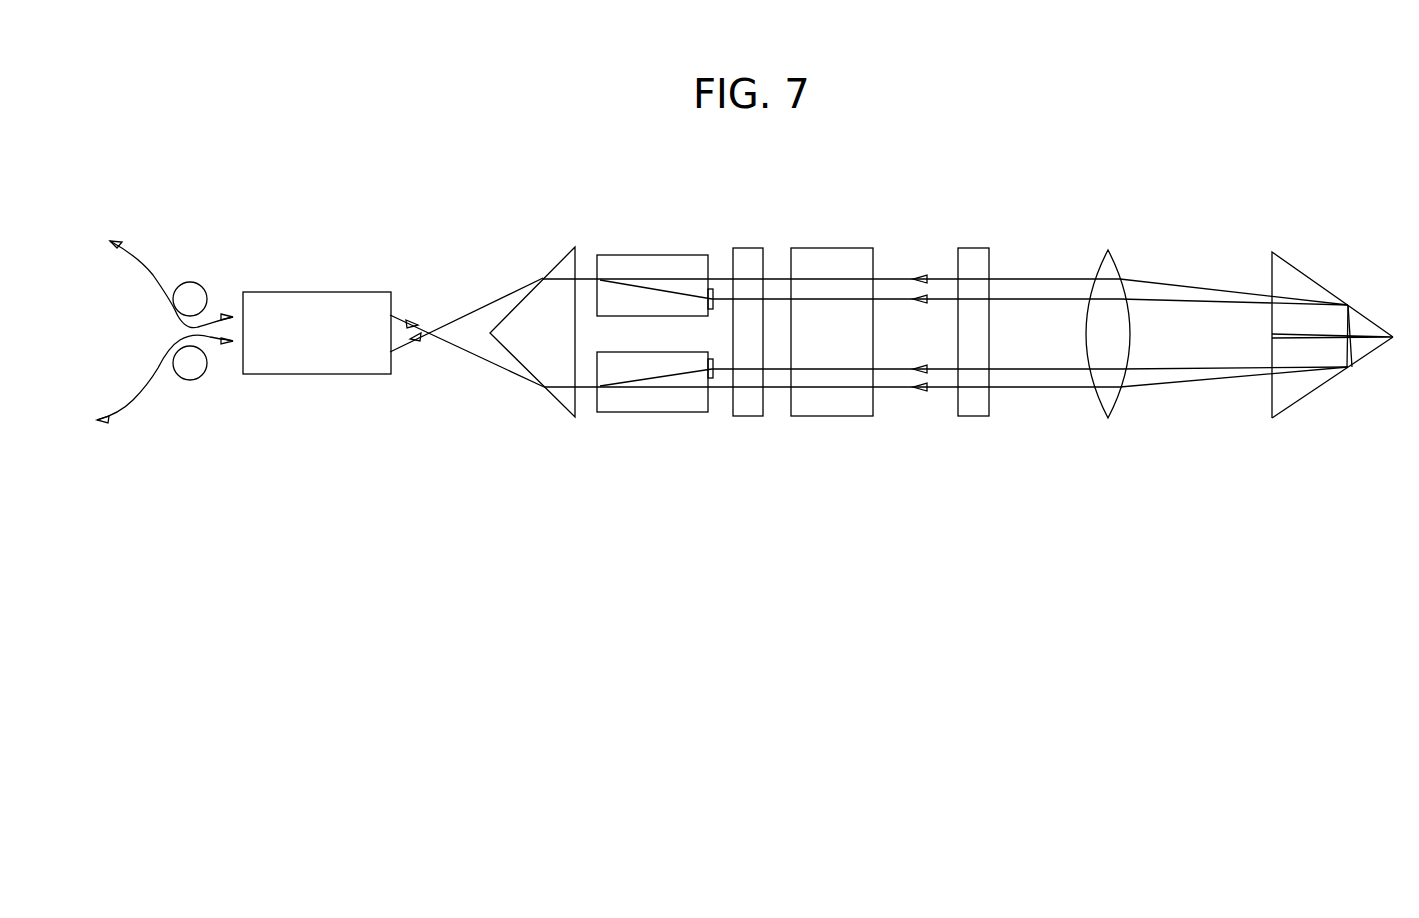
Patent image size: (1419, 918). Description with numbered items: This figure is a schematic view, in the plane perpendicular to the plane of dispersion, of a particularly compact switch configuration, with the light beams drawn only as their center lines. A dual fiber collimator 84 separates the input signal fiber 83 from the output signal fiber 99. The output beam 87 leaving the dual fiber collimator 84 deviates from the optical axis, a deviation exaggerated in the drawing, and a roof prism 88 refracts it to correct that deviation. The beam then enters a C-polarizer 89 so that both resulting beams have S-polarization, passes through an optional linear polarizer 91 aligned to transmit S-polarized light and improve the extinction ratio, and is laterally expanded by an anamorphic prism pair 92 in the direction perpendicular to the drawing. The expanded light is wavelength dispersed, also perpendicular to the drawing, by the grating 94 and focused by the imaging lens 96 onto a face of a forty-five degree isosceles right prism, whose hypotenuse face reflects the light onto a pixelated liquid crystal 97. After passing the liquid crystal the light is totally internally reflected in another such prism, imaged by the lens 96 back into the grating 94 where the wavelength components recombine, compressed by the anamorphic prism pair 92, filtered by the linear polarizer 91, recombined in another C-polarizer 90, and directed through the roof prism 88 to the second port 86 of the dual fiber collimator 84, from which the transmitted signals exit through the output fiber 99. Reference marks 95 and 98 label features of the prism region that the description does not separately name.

The input signal fiber 83 is at (153, 275).
The dual fiber collimator 84 is at (312, 292).
The second port 86 is at (460, 316).
The output beam 87 is at (462, 352).
The roof prism 88 is at (557, 265).
The C-polarizer 89 is at (653, 413).
The C-polarizer 90 is at (653, 254).
The linear polarizer 91 is at (757, 247).
The anamorphic prism pair 92 is at (848, 247).
The grating 94 is at (972, 247).
The prism face 95 is at (1326, 382).
The imaging lens 96 is at (1110, 263).
The pixelated liquid crystal 97 is at (1378, 340).
The prism 98 is at (1330, 292).
The output signal fiber 99 is at (147, 402).